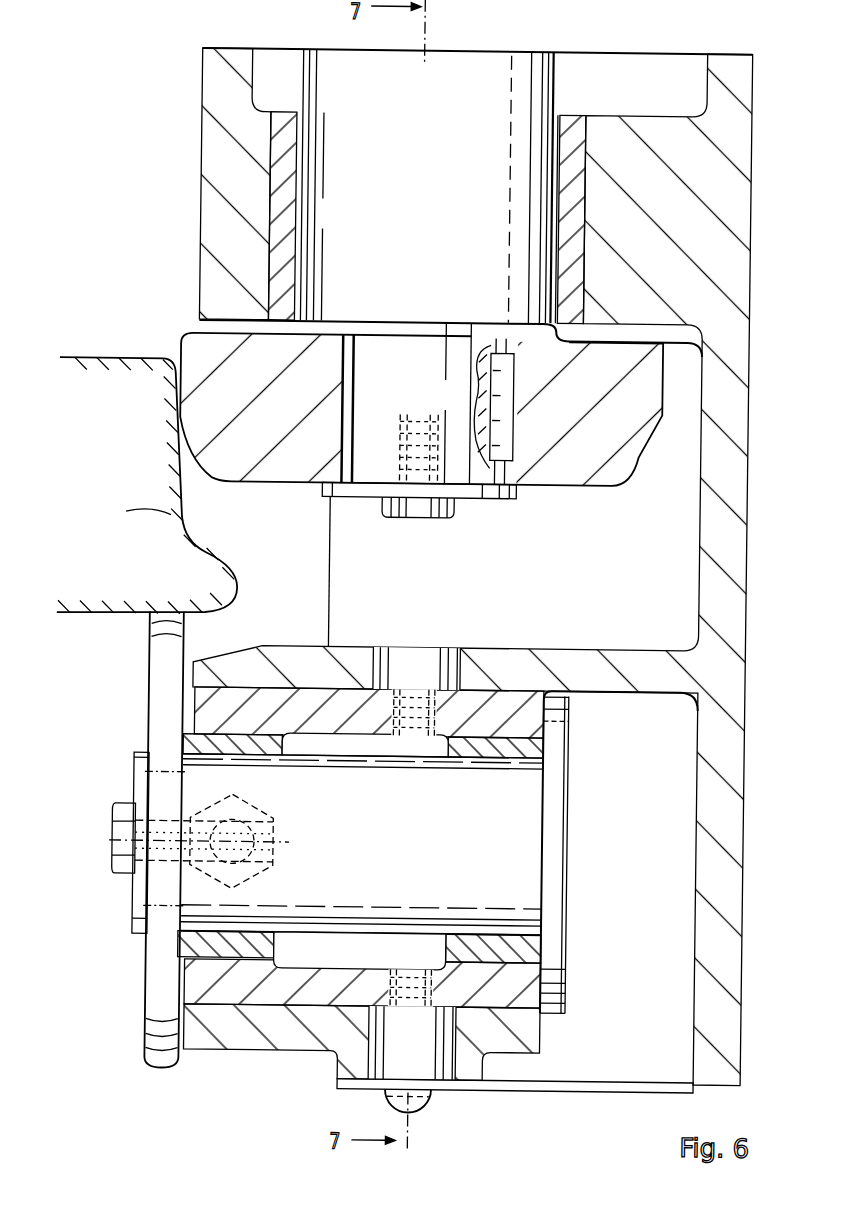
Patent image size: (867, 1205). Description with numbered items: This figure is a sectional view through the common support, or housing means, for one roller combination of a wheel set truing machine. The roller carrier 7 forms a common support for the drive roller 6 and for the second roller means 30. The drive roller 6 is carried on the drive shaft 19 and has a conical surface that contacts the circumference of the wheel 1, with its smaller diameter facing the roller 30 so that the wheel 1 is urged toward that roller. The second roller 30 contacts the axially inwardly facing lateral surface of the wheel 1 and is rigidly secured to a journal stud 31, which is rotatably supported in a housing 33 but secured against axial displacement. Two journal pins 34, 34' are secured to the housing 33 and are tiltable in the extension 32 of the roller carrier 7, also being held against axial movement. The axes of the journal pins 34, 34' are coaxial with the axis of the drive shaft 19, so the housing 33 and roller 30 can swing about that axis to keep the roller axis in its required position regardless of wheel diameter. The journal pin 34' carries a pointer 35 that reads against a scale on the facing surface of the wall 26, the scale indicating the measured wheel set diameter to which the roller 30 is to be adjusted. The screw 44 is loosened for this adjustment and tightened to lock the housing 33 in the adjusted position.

The wheel 1 is at (182, 525).
The drive roller 6 is at (637, 381).
The roller carrier 7 is at (689, 227).
The drive shaft 19 is at (506, 79).
The wall 26 is at (758, 1005).
The second roller means 30 is at (171, 681).
The journal stud 31 is at (277, 902).
The extension of the roller carrier 32 is at (255, 1061).
The housing 33 is at (235, 988).
The journal pin 34 is at (423, 670).
The journal pin 34' is at (432, 1048).
The pointer 35 is at (573, 1088).
The screw 44 is at (203, 881).